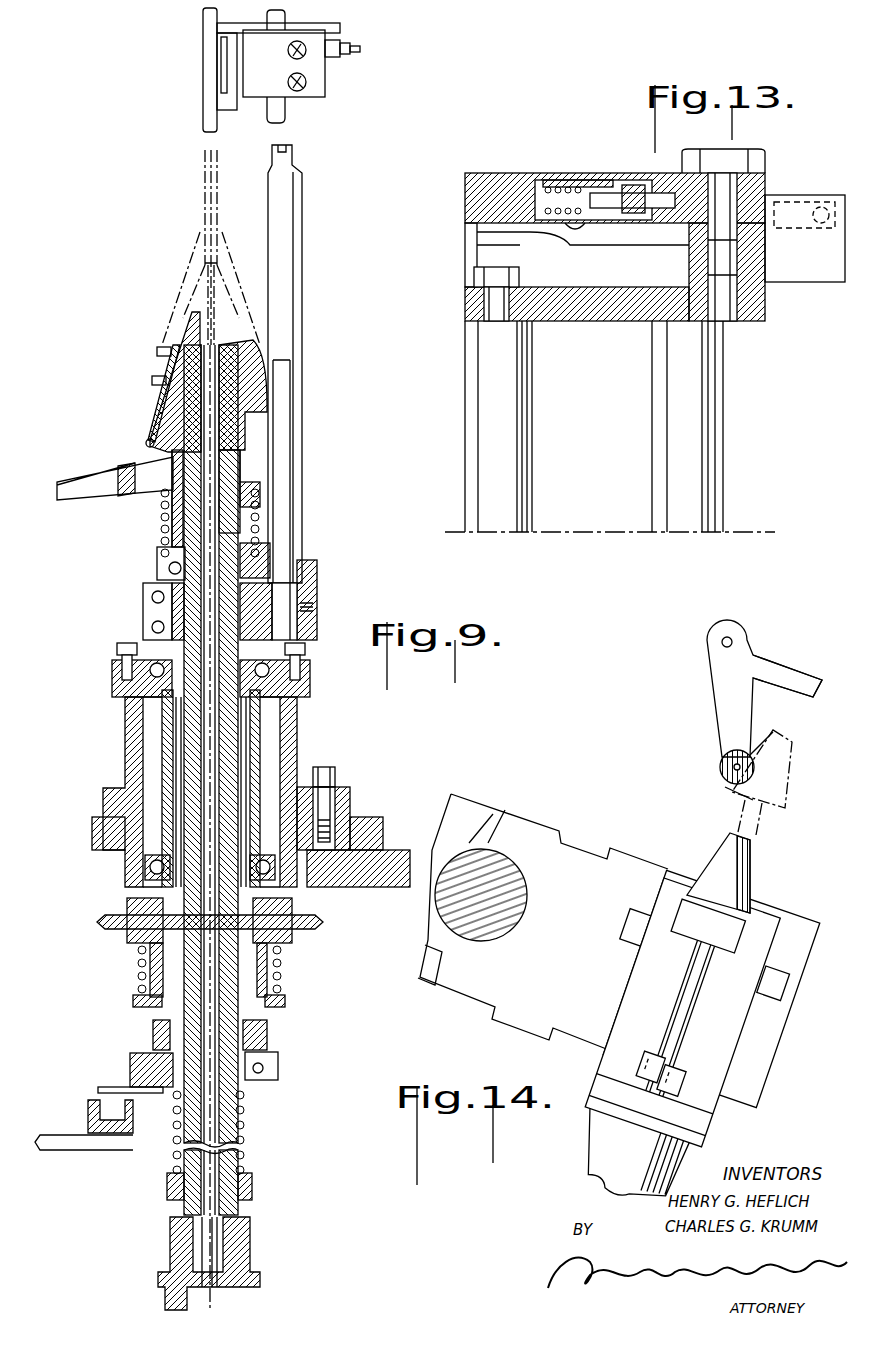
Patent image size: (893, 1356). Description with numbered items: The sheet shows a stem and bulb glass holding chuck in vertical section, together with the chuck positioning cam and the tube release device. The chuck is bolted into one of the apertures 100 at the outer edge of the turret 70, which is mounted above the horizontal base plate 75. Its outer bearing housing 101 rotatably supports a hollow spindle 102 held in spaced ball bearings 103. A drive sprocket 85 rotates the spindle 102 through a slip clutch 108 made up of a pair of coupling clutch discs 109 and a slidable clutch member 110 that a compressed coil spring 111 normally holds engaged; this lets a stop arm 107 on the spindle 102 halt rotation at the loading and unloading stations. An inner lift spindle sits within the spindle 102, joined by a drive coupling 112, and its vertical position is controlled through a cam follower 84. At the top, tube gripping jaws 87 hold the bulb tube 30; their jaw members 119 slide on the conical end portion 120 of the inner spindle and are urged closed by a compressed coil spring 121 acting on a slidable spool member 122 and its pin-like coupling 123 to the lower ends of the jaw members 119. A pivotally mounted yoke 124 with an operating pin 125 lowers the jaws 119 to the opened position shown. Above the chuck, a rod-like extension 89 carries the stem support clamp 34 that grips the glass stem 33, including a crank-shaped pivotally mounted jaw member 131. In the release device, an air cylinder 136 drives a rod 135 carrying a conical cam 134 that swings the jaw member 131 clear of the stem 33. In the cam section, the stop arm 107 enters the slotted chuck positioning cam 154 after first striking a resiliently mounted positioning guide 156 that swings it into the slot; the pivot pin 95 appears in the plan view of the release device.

In FIG. 9, the bulb tube 30 is at (205, 198).
In FIG. 9, the glass stem 33 is at (208, 72).
In FIG. 9, the stem support clamp 34 is at (228, 27).
In FIG. 14, the stem support clamp 34 is at (813, 670).
In FIG. 9, the turret 70 is at (380, 850).
In FIG. 13, the base plate 75 is at (598, 505).
In FIG. 9, the cam follower 84 is at (252, 1280).
In FIG. 9, the drive sprocket 85 is at (100, 922).
In FIG. 9, the tube gripping jaws 87 is at (150, 372).
In FIG. 9, the rod-like extension 89 is at (288, 216).
In FIG. 14, the pivot pin 95 is at (495, 858).
In FIG. 9, the apertures 100 is at (103, 815).
In FIG. 9, the outer bearing housing 101 is at (297, 735).
In FIG. 9, the hollow spindle 102 is at (305, 598).
In FIG. 9, the ball bearings 103 is at (310, 690).
In FIG. 9, the stop arm 107 is at (130, 1085).
In FIG. 9, the slip clutch 108 is at (117, 907).
In FIG. 9, the coupling clutch discs 109 is at (150, 945).
In FIG. 9, the slidable clutch member 110 is at (140, 958).
In FIG. 9, the compressed coil spring 111 is at (140, 990).
In FIG. 9, the drive coupling 112 is at (262, 557).
In FIG. 9, the jaw members 119 is at (195, 336).
In FIG. 9, the conical end portion 120 is at (245, 355).
In FIG. 9, the compressed coil spring 121 is at (162, 530).
In FIG. 9, the slidable spool member 122 is at (158, 487).
In FIG. 9, the pin-like coupling 123 is at (146, 442).
In FIG. 9, the pivotally mounted yoke 124 is at (125, 497).
In FIG. 9, the operating pin 125 is at (72, 478).
In FIG. 14, the pivotally mounted jaw member 131 is at (725, 715).
In FIG. 14, the conical cam 134 is at (745, 865).
In FIG. 14, the drive rod 135 is at (685, 1016).
In FIG. 14, the air cylinder 136 is at (672, 1172).
In FIG. 9, the chuck positioning cam 154 is at (88, 1115).
In FIG. 13, the chuck positioning cam 154 is at (570, 140).
In FIG. 13, the positioning guide 156 is at (491, 173).